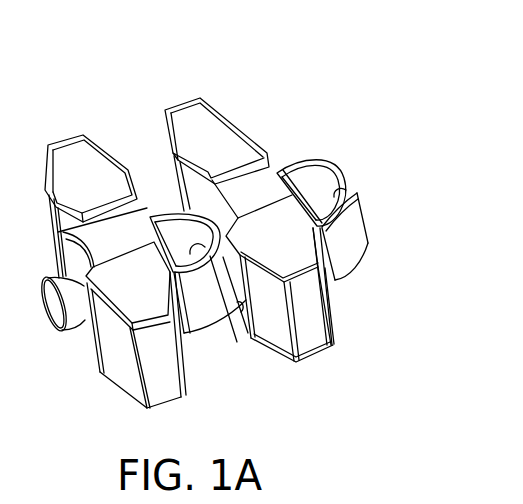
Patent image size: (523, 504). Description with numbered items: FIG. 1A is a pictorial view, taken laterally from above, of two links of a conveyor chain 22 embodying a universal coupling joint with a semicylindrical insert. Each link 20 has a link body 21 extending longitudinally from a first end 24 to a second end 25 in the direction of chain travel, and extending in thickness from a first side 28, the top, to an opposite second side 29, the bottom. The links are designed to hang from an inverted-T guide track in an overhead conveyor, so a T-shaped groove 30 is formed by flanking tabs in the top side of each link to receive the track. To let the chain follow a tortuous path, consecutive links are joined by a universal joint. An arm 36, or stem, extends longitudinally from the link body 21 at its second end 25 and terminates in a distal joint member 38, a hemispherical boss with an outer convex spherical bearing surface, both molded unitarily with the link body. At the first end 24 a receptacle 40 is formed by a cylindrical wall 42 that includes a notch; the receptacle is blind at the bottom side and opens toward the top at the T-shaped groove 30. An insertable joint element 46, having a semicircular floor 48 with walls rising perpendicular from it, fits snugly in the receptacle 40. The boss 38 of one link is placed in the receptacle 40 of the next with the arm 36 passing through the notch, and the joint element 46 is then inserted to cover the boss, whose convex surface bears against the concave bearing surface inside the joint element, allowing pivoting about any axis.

The chain 22 is at (324, 78).
The second end 25 is at (163, 150).
The first side 28 is at (190, 103).
The link body 21 is at (246, 142).
The T-shaped groove 30 is at (192, 188).
The first end 24 is at (185, 333).
The joint element 46 is at (237, 342).
The receptacle 40 is at (315, 163).
The semicircular floor 48 is at (335, 194).
The cylindrical wall 42 is at (356, 251).
The link 20 is at (336, 345).
The second side 29 is at (304, 363).
The arm 36 is at (84, 323).
The joint member 38 is at (62, 328).